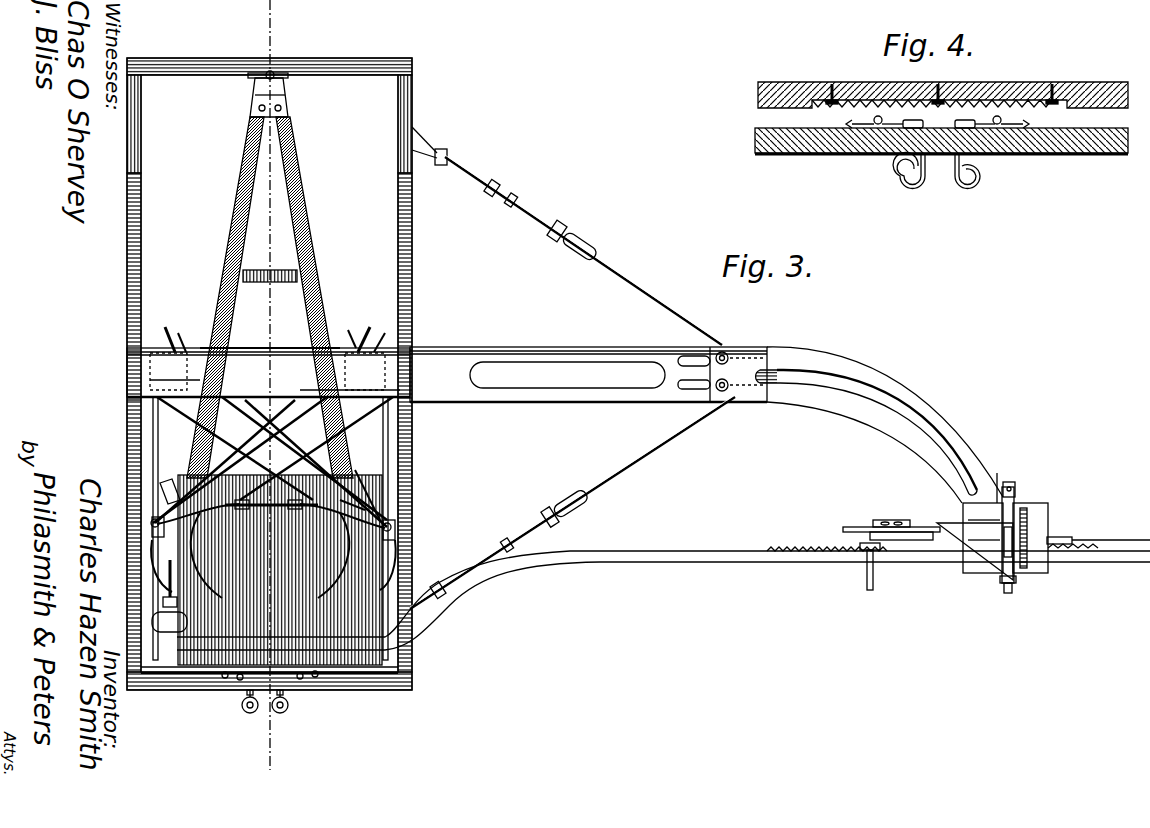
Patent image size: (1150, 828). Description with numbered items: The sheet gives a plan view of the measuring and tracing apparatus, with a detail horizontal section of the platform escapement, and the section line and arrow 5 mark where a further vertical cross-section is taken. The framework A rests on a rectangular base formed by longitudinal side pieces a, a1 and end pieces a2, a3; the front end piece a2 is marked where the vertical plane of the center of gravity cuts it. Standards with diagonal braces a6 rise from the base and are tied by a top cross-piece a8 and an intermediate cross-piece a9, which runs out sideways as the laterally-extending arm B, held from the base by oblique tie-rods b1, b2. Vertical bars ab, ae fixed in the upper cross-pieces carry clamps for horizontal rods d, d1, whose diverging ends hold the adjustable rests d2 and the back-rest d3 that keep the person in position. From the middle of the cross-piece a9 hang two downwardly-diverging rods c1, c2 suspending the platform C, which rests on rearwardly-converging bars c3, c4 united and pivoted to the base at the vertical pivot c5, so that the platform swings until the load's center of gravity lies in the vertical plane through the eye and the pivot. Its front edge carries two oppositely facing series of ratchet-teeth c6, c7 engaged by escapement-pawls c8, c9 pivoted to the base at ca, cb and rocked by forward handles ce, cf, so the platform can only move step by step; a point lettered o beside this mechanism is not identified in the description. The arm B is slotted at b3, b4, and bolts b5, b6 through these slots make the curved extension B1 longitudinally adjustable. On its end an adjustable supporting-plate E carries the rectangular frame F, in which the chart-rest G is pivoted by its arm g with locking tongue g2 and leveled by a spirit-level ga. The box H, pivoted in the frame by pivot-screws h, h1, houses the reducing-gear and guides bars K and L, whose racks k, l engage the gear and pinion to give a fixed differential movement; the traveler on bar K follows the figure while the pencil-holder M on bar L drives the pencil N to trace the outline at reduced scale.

In FIG. 3, the section line and arrow 5 is at (282, 743).
In FIG. 3, the framework A is at (269, 374).
In FIG. 3, the longitudinal side piece a is at (127, 413).
In FIG. 3, the longitudinal side piece a1 is at (424, 425).
In FIG. 3, the end piece a2 is at (360, 690).
In FIG. 4, the end piece a2 is at (1119, 154).
In FIG. 3, the end piece a3 is at (346, 76).
In FIG. 3, the diagonal braces a6 is at (141, 250).
In FIG. 3, the top cross-piece a8 is at (421, 387).
In FIG. 3, the intermediate cross-piece a9 is at (270, 348).
In FIG. 3, the vertical bar ab is at (127, 358).
In FIG. 3, the vertical bar ae is at (420, 347).
In FIG. 3, the laterally-extending arm B is at (565, 400).
In FIG. 3, the curved extension B1 is at (977, 430).
In FIG. 3, the oblique tie-rod b1 is at (631, 478).
In FIG. 3, the oblique tie-rod b2 is at (601, 257).
In FIG. 3, the slot b3 is at (688, 355).
In FIG. 3, the slot b4 is at (690, 390).
In FIG. 3, the bolt b5 is at (728, 356).
In FIG. 3, the bolt b6 is at (737, 393).
In FIG. 3, the platform C is at (223, 628).
In FIG. 3, the downwardly-diverging rod c1 is at (175, 480).
In FIG. 3, the downwardly-diverging rod c2 is at (347, 477).
In FIG. 3, the rearwardly-converging bar c3 is at (270, 297).
In FIG. 3, the rearwardly-converging bar c4 is at (292, 254).
In FIG. 3, the vertical pivot c5 is at (274, 72).
In FIG. 3, the ratchet-teeth c6 is at (227, 675).
In FIG. 4, the ratchet-teeth c6 is at (836, 110).
In FIG. 3, the ratchet-teeth c7 is at (315, 675).
In FIG. 4, the ratchet-teeth c7 is at (1050, 108).
In FIG. 3, the escapement-pawl c8 is at (250, 714).
In FIG. 4, the escapement-pawl c8 is at (895, 130).
In FIG. 3, the escapement-pawl c9 is at (300, 676).
In FIG. 4, the escapement-pawl c9 is at (996, 130).
In FIG. 4, the pawl pivot ca is at (876, 127).
In FIG. 4, the pawl pivot cb is at (1022, 153).
In FIG. 3, the vertically-oscillating handle ce is at (252, 717).
In FIG. 4, the vertically-oscillating handle ce is at (910, 192).
In FIG. 3, the vertically-oscillating handle cf is at (282, 718).
In FIG. 4, the vertically-oscillating handle cf is at (972, 193).
In FIG. 3, the horizontal rod d is at (128, 463).
In FIG. 3, the horizontal rod d1 is at (424, 459).
In FIG. 3, the rest d2 is at (197, 557).
In FIG. 3, the back-rest d3 is at (280, 508).
In FIG. 3, the pivot o is at (273, 528).
In FIG. 3, the supporting-plate E is at (1013, 487).
In FIG. 3, the rectangular frame F is at (1017, 510).
In FIG. 3, the chart-rest G is at (913, 527).
In FIG. 3, the horizontally-projecting arm g is at (987, 548).
In FIG. 3, the tongue g2 is at (1017, 578).
In FIG. 3, the spirit-level ga is at (893, 518).
In FIG. 3, the box H is at (1045, 524).
In FIG. 3, the pivot-screw h is at (1008, 584).
In FIG. 3, the pivot-screw h1 is at (1008, 482).
In FIG. 3, the longitudinally-moving bar K is at (778, 562).
In FIG. 3, the rack k is at (807, 547).
In FIG. 3, the longitudinally-moving bar L is at (923, 541).
In FIG. 3, the rack l is at (1067, 538).
In FIG. 3, the pencil-holder M is at (866, 550).
In FIG. 3, the pencil N is at (870, 590).